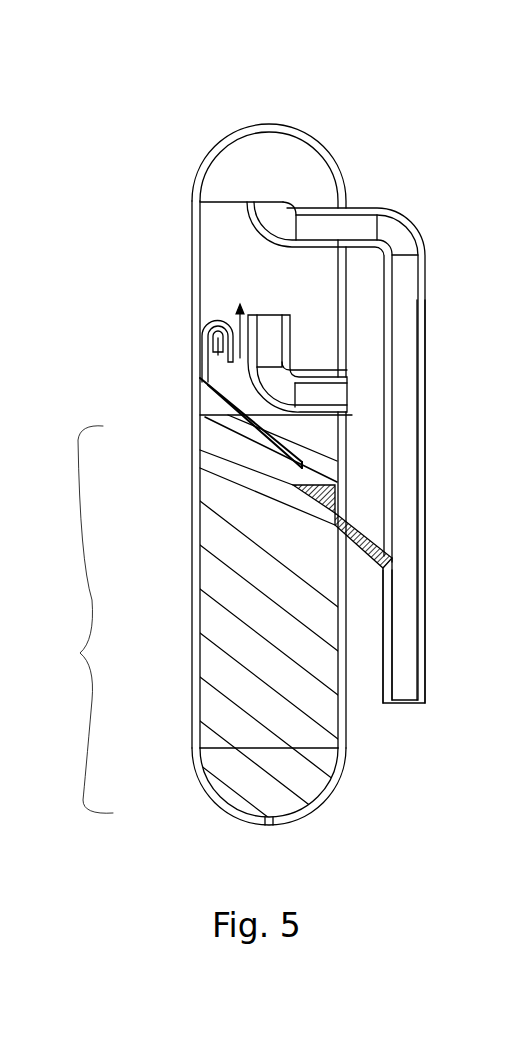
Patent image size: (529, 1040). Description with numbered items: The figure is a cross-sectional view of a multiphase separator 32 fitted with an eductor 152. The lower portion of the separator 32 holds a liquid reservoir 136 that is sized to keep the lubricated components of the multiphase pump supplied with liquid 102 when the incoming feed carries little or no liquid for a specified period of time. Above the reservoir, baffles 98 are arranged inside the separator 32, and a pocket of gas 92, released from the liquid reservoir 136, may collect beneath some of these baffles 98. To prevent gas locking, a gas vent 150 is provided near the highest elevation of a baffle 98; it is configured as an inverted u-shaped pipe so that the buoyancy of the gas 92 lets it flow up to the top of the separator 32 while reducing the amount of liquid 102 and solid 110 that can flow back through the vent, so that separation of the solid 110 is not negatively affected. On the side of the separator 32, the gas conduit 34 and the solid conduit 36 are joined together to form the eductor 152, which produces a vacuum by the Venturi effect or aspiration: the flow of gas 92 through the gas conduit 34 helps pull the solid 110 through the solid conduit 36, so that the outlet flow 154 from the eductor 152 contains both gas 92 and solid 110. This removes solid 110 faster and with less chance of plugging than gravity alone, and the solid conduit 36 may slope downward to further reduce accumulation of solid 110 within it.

The multiphase separator 32 is at (364, 110).
The gas conduit 34 is at (426, 328).
The solid conduit 36 is at (380, 553).
The gas 92 is at (252, 165).
The baffles 98 is at (240, 466).
The liquid 102 is at (257, 637).
The solid 110 is at (357, 513).
The liquid reservoir 136 is at (195, 474).
The gas vent 150 is at (215, 318).
The eductor 152 is at (440, 514).
The outlet flow 154 is at (398, 628).